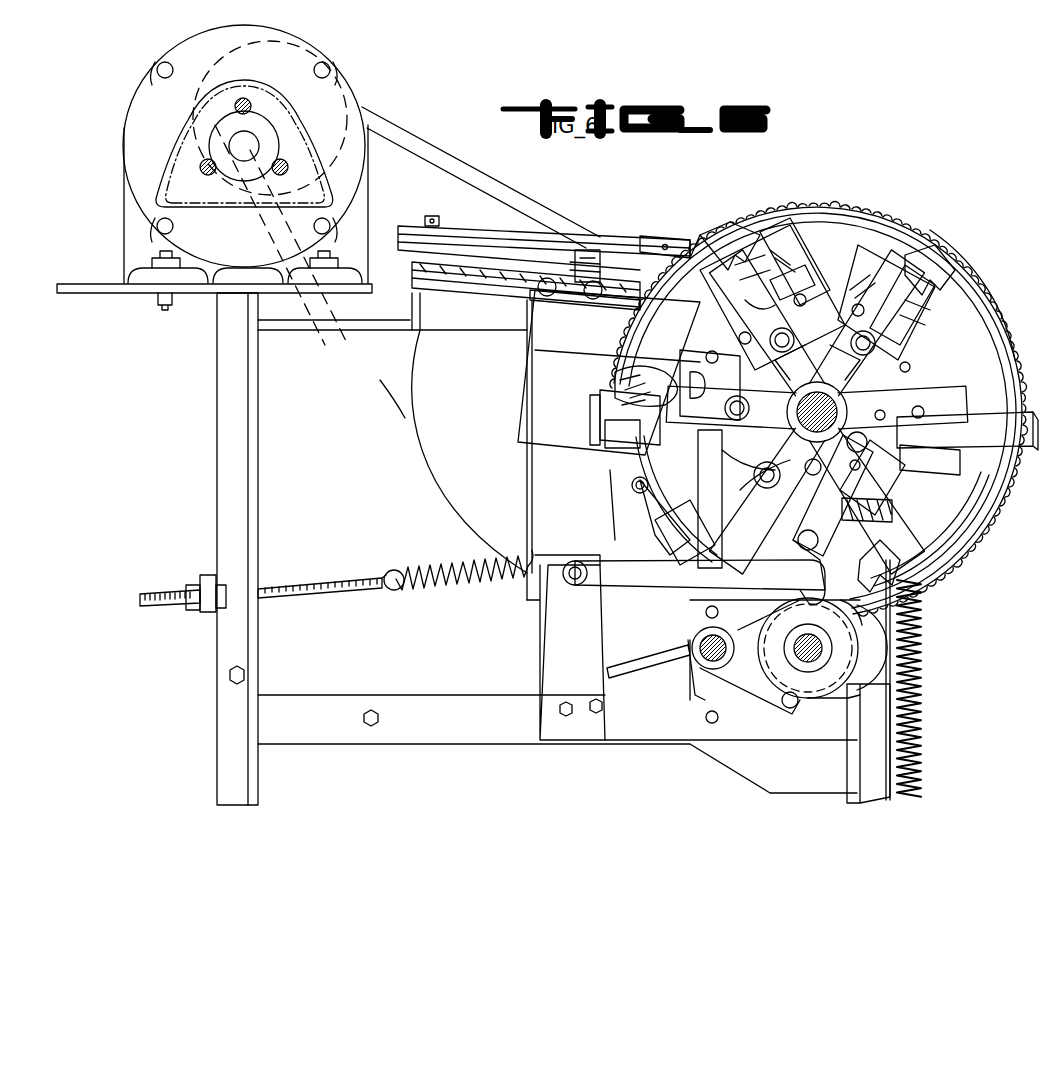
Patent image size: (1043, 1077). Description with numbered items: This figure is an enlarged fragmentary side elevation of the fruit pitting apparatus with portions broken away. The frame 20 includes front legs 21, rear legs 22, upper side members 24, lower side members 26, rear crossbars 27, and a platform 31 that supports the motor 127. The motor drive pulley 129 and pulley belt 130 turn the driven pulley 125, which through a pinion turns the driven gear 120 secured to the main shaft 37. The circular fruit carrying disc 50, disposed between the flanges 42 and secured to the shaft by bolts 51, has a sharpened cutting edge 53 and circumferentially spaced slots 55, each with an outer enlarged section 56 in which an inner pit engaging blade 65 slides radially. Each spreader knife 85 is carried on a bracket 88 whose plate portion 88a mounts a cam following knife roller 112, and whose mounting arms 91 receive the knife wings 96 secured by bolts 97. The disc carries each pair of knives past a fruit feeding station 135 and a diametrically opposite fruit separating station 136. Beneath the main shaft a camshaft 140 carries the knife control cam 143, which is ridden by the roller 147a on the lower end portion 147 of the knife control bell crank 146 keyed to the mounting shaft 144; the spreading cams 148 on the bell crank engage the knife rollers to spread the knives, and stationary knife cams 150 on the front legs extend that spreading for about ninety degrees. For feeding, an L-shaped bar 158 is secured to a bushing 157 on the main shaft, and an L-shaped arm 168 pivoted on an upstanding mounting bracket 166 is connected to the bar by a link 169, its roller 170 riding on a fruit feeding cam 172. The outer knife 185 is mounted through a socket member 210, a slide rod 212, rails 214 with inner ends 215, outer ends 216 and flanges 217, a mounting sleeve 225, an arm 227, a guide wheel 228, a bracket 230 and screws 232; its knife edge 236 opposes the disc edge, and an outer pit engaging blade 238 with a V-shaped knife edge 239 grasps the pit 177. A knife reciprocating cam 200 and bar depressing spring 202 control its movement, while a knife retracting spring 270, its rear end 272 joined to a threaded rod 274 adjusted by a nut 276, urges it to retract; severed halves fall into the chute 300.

The frame 20 is at (202, 431).
The front legs 21 is at (848, 768).
The rear legs 22 is at (216, 393).
The upper side members 24 is at (470, 325).
The lower side members 26 is at (687, 740).
The rear crossbars 27 is at (205, 575).
The platform 31 is at (80, 290).
The main shaft 37 is at (880, 378).
The flanges 42 is at (834, 358).
The fruit carrying disc 50 is at (838, 215).
The bolts 51 is at (805, 462).
The cutting edge 53 is at (970, 545).
The slots 55 is at (910, 500).
The outer enlarged section 56 is at (960, 370).
The inner pit engaging blades 65 is at (920, 588).
The spreader knives 85 is at (960, 565).
The bracket 88 is at (720, 415).
The plate portion 88a is at (706, 381).
The mounting arms 91 is at (745, 330).
The wings 96 is at (790, 560).
The bolts 97 is at (945, 365).
The cam following knife rollers 112 is at (860, 465).
The driven gear 120 is at (718, 222).
The driven pulley 125 is at (456, 450).
The motor 127 is at (124, 133).
The drive pulley 129 is at (310, 42).
The pulley belt 130 is at (432, 158).
The fruit feeding station 135 is at (1010, 330).
The fruit separating station 136 is at (610, 442).
The camshaft 140 is at (870, 648).
The knife control cam 143 is at (870, 690).
The mounting shaft 144 is at (705, 640).
The knife control bell crank 146 is at (680, 550).
The lower end portion 147 is at (718, 692).
The roller 147a is at (783, 700).
The spreading cams 148 is at (710, 450).
The stationary knife cams 150 is at (895, 503).
The bushing 157 is at (875, 428).
The L-shaped bar 158 is at (967, 431).
The mounting bracket 166 is at (560, 638).
The L-shaped arm 168 is at (680, 585).
The link 169 is at (815, 515).
The roller 170 is at (815, 580).
The fruit feeding cam 172 is at (880, 628).
The pit 177 is at (618, 378).
The outer knife 185 is at (512, 385).
The knife reciprocating cam 200 is at (870, 662).
The bar depressing spring 202 is at (920, 705).
The socket member 210 is at (640, 330).
The slide rod 212 is at (425, 280).
The rails 214 is at (478, 222).
The inner ends 215 is at (660, 242).
The outer ends 216 is at (428, 232).
The flanges 217 is at (500, 215).
The mounting sleeve 225 is at (520, 290).
The arm 227 is at (570, 262).
The guide wheel 228 is at (598, 245).
The bracket 230 is at (545, 296).
The screws 232 is at (593, 300).
The knife edge 236 is at (640, 436).
The outer pit engaging blade 238 is at (603, 412).
The V-shaped knife edge 239 is at (630, 395).
The knife retracting spring 270 is at (462, 592).
The rear end 272 is at (400, 592).
The threaded rod 274 is at (362, 592).
The nut 276 is at (192, 612).
The chute 300 is at (632, 660).